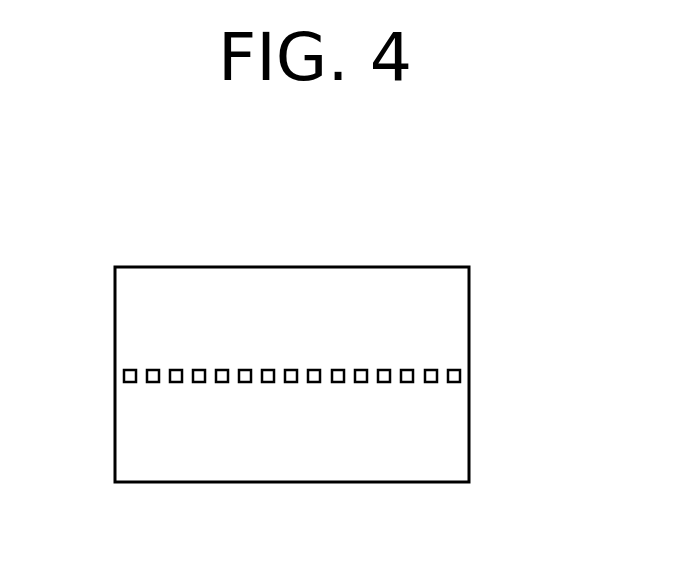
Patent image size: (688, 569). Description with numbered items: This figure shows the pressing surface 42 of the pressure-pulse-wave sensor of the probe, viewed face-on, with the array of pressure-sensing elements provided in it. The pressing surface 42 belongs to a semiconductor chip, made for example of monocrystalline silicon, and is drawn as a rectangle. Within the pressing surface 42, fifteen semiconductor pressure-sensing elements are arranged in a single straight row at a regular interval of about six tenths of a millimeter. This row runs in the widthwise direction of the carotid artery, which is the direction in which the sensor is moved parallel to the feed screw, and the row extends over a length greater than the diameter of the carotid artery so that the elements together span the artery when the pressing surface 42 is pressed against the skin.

The pressing surface 42 is at (345, 280).